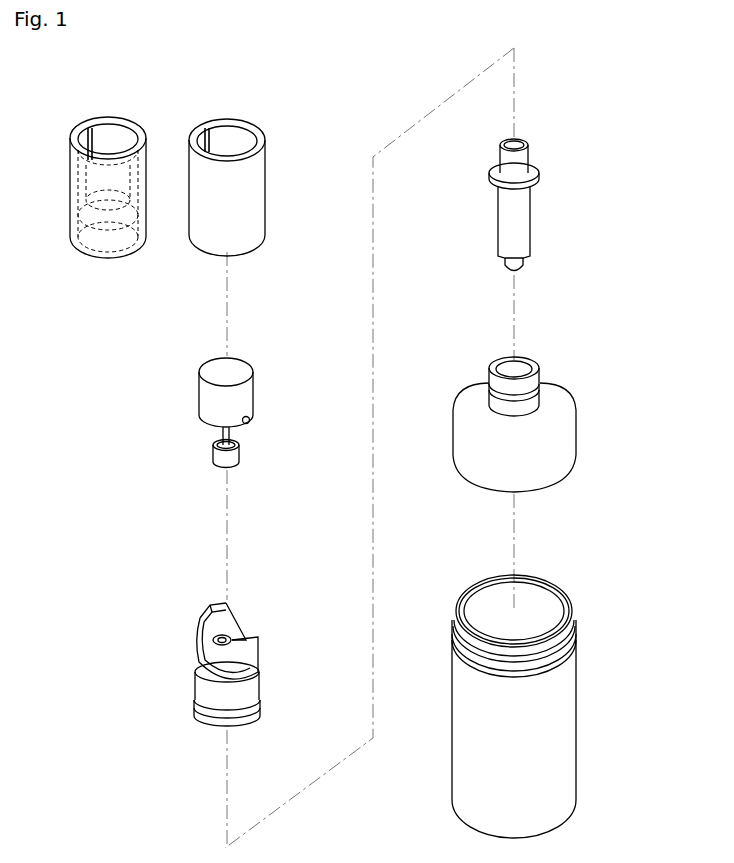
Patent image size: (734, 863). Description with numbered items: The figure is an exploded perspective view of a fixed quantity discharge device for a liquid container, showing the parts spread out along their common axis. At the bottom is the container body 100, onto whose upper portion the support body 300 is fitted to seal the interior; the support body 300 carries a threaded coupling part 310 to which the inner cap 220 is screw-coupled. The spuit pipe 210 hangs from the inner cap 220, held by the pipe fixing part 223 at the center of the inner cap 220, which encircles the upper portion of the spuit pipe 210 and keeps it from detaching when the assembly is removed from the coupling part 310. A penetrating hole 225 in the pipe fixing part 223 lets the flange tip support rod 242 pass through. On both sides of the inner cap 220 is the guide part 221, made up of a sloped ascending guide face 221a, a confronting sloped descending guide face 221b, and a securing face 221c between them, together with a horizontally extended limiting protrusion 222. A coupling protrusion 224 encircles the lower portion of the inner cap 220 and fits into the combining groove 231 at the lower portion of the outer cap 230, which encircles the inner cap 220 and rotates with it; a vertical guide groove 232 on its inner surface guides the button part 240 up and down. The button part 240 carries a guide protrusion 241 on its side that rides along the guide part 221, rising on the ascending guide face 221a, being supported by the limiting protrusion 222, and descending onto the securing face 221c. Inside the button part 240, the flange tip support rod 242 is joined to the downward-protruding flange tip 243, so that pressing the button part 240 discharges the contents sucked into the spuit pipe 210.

The container body 100 is at (545, 742).
The spuit pipe 210 is at (515, 220).
The inner cap 220 is at (182, 680).
The guide part 221 is at (138, 674).
The ascending guide face 221a is at (200, 643).
The descending guide face 221b is at (200, 655).
The securing face 221c is at (200, 672).
The limiting protrusion 222 is at (208, 620).
The pipe fixing part 223 is at (245, 640).
The coupling protrusion 224 is at (260, 695).
The penetrating hole 225 is at (230, 635).
The outer cap 230 is at (237, 215).
The combining groove 231 is at (118, 238).
The vertical guide groove 232 is at (90, 140).
The button part 240 is at (208, 403).
The guide protrusion 241 is at (250, 420).
The flange tip support rod 242 is at (216, 437).
The flange tip 243 is at (213, 463).
The support body 300 is at (543, 450).
The coupling part 310 is at (535, 372).